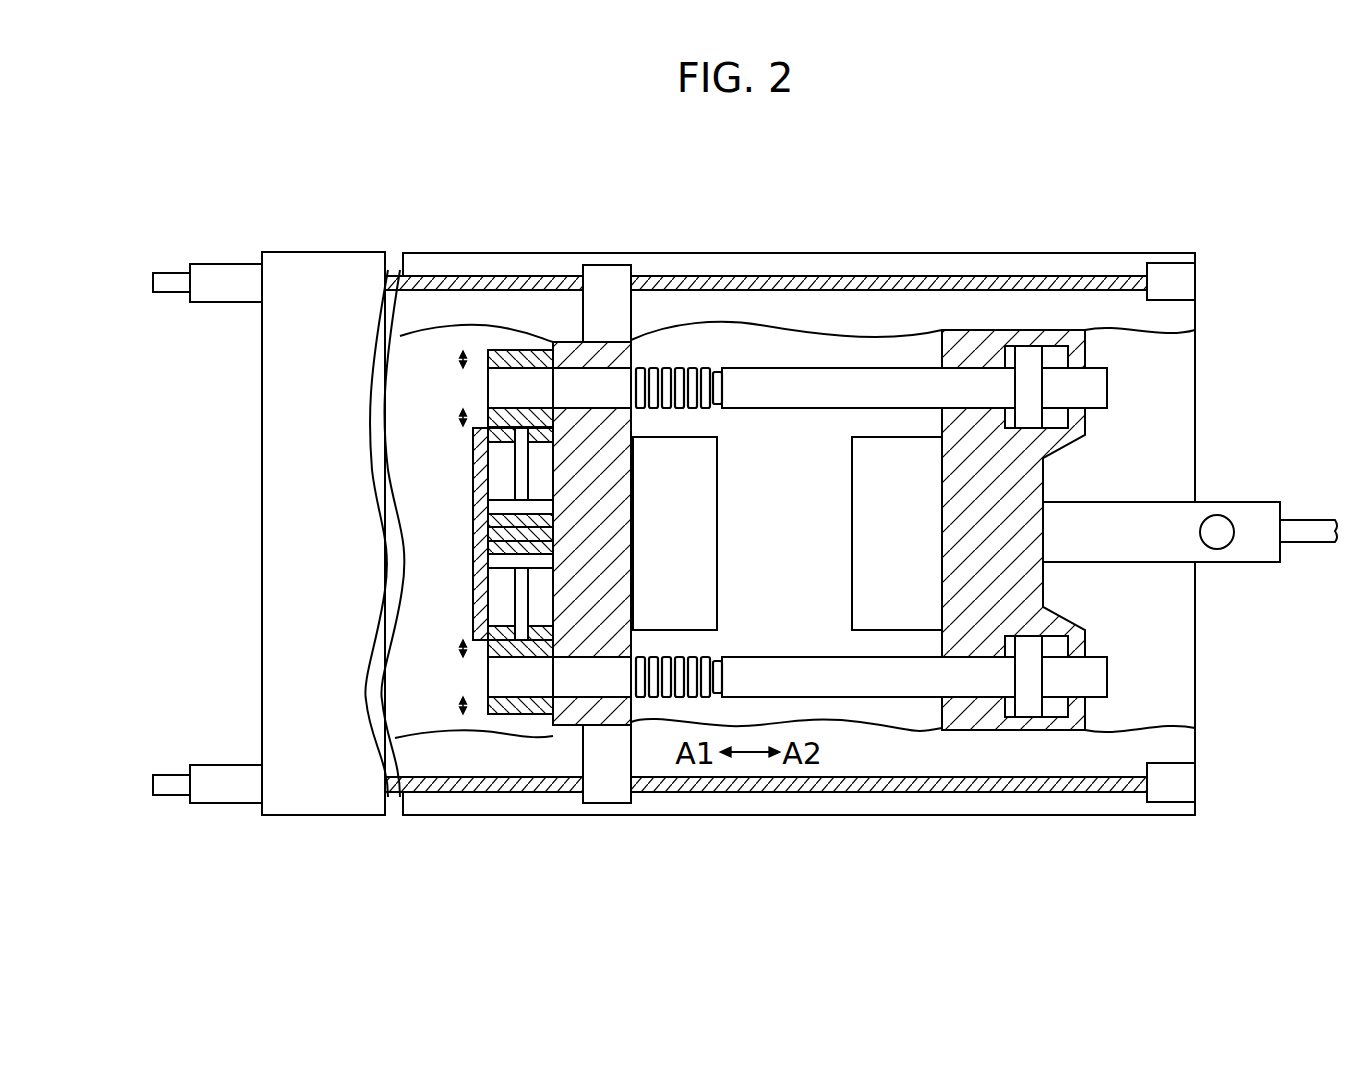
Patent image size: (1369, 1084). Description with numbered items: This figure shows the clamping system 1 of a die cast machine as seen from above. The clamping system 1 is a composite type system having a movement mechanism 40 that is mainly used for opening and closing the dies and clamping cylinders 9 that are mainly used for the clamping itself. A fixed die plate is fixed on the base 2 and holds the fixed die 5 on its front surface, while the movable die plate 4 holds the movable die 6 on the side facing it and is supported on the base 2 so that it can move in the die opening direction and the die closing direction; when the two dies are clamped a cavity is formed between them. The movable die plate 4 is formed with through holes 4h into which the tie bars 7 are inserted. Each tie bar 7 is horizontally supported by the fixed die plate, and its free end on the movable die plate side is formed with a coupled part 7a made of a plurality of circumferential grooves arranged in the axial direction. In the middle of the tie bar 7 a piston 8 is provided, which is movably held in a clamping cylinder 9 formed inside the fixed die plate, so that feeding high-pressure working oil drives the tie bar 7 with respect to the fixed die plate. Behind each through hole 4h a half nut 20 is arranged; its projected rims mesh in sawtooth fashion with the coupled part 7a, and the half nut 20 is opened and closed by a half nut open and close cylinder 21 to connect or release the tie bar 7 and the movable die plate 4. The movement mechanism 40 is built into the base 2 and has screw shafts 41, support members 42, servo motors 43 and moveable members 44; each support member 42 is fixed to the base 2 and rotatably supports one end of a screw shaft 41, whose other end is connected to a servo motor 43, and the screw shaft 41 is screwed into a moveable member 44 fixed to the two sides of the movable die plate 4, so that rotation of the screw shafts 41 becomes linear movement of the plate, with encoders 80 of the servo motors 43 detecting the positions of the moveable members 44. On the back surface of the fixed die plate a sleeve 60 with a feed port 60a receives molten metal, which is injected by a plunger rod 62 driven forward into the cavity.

The clamping system 1 is at (951, 929).
The base 2 is at (447, 264).
The movable die plate 4 is at (583, 630).
The through holes 4h is at (600, 383).
The fixed die 5 is at (868, 556).
The movable die 6 is at (705, 556).
The tie bar 7 is at (812, 395).
The coupled part 7a is at (695, 410).
The piston 8 is at (1028, 358).
The clamping cylinder 9 is at (1056, 344).
The half nut 20 is at (533, 350).
The half nut open and close cylinder 21 is at (500, 460).
The movement mechanism 40 is at (690, 268).
The screw shaft 41 is at (938, 278).
The support member 42 is at (1172, 282).
The servo motor 43 is at (236, 283).
The moveable member 44 is at (597, 278).
The sleeve 60 is at (1145, 515).
The feed port 60a is at (1217, 522).
The plunger rod 62 is at (1317, 528).
The encoder 80 is at (172, 282).